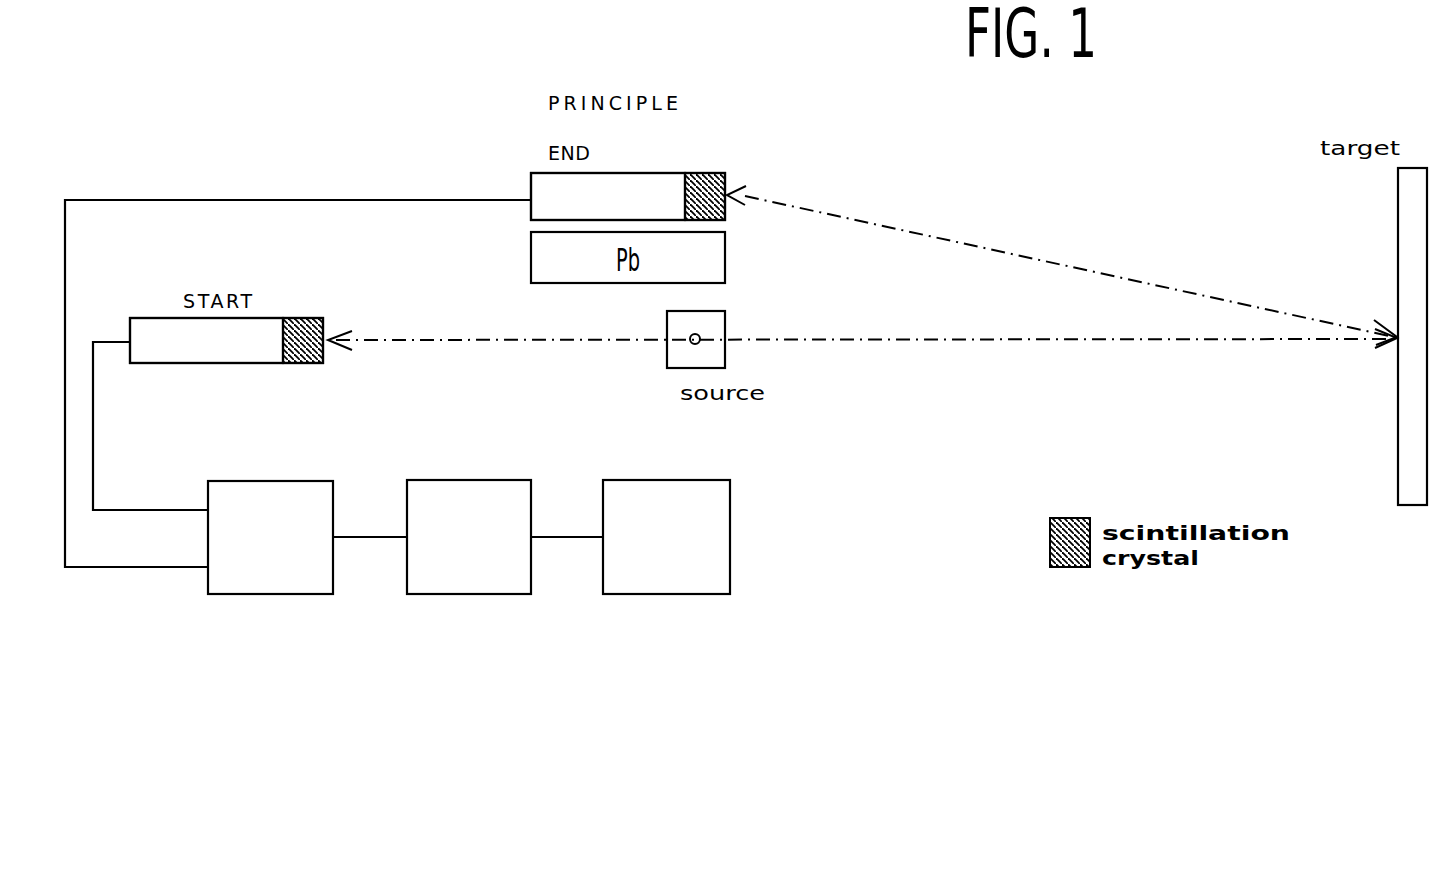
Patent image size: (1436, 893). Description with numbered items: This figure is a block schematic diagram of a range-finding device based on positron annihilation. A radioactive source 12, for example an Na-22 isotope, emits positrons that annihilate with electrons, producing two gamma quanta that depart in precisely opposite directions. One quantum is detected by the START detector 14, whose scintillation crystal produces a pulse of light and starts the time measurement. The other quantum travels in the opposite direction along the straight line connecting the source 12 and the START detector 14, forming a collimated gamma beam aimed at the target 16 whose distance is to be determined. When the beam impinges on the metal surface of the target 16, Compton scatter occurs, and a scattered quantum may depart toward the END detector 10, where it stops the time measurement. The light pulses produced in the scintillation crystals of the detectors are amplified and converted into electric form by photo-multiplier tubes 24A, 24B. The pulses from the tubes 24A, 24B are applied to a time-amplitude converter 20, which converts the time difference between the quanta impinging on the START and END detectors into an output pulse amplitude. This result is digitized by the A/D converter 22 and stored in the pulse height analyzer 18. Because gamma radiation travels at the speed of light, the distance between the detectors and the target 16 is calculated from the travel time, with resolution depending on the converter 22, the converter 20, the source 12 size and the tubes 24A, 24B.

The END detector 10 is at (656, 174).
The source 12 is at (667, 348).
The START detector 14 is at (216, 364).
The target 16 is at (1398, 448).
The pulse height analyzer 18 is at (730, 560).
The time-amplitude converter 20 is at (275, 594).
The A/D converter 22 is at (445, 594).
The photo-multiplier tube 24A is at (531, 208).
The photo-multiplier tube 24B is at (160, 318).